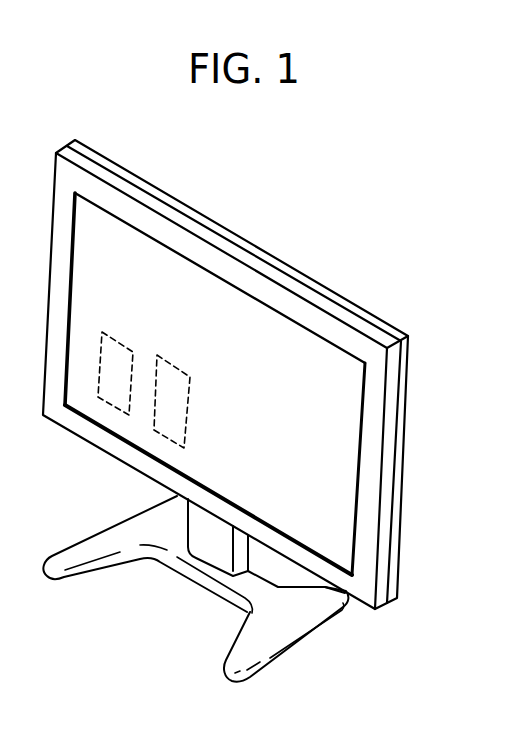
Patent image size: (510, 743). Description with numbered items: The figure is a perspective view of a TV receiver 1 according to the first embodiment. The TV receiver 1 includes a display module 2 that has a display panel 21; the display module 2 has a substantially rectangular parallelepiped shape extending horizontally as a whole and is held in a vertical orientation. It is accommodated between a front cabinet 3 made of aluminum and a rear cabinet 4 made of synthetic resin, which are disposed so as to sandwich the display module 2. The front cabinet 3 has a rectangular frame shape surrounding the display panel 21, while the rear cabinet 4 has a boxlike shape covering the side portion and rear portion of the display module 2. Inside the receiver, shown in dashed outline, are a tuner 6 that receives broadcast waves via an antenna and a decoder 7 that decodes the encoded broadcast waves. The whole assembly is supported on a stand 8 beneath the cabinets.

The TV receiver 1 is at (353, 233).
The display module 2 is at (264, 384).
The display panel 21 is at (307, 358).
The front cabinet 3 is at (365, 537).
The rear cabinet 4 is at (402, 492).
The tuner 6 is at (113, 395).
The decoder 7 is at (168, 425).
The stand 8 is at (290, 630).